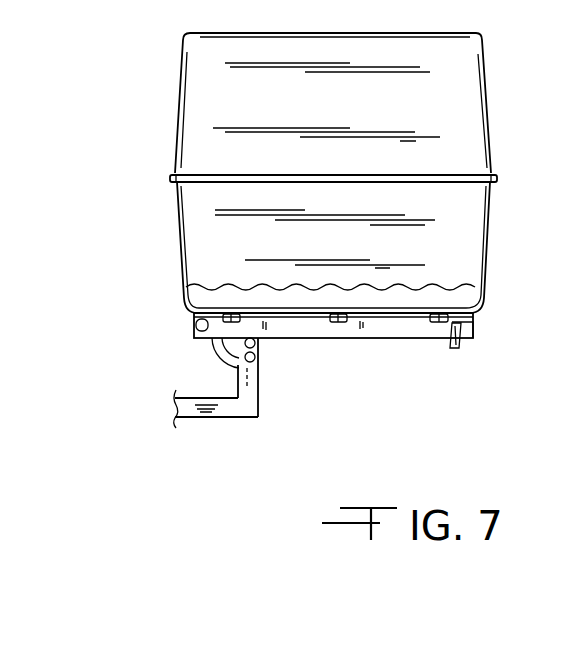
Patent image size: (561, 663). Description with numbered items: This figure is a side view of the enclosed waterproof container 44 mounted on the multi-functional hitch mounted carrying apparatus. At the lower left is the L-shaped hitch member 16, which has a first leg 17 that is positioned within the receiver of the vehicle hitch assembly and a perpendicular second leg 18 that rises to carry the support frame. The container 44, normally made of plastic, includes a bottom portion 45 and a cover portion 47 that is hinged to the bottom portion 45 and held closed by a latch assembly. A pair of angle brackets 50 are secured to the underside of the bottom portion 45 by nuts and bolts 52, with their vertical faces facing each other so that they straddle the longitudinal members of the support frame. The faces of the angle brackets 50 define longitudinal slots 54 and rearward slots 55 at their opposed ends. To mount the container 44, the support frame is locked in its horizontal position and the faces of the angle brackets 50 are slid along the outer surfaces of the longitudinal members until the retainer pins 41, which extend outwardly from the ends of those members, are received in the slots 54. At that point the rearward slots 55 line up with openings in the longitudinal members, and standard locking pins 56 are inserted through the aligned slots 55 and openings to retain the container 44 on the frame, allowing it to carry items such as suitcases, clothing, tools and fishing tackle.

The hitch member 16 is at (193, 425).
The first leg 17 is at (224, 420).
The second leg 18 is at (237, 378).
The retainer pins 41 is at (212, 320).
The enclosed waterproof container 44 is at (172, 110).
The bottom portion 45 is at (343, 256).
The cover portion 47 is at (347, 117).
The angle brackets 50 is at (290, 340).
The bolts 52 is at (433, 338).
The longitudinal slots 54 is at (195, 324).
The rearward slots 55 is at (477, 330).
The locking pins 56 is at (456, 343).